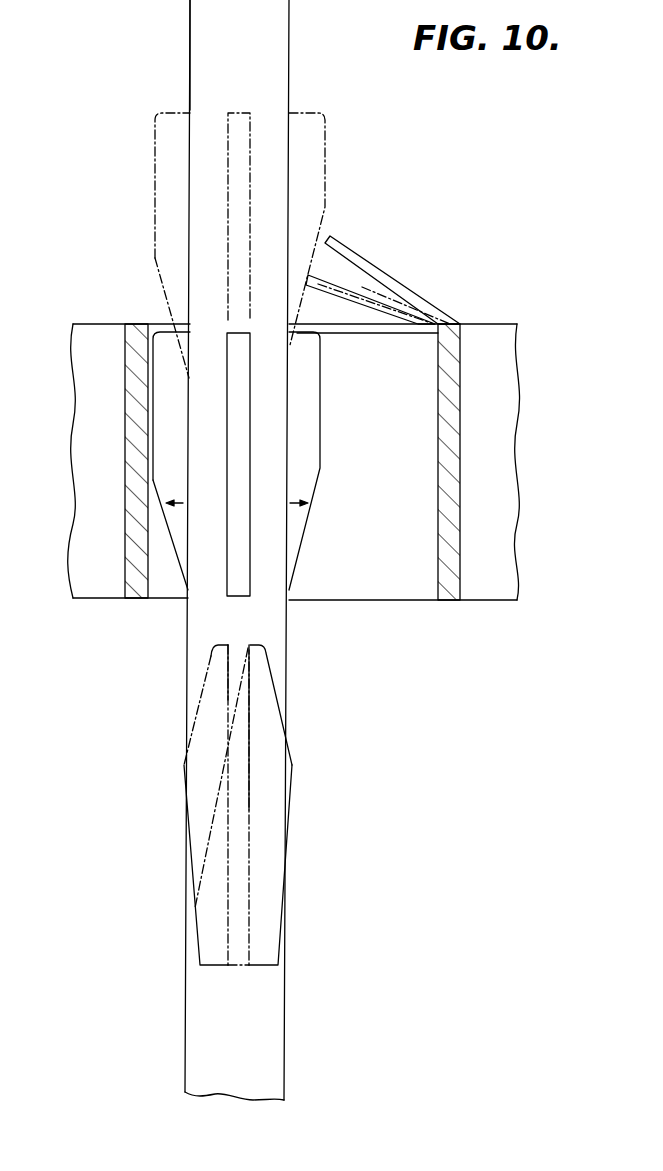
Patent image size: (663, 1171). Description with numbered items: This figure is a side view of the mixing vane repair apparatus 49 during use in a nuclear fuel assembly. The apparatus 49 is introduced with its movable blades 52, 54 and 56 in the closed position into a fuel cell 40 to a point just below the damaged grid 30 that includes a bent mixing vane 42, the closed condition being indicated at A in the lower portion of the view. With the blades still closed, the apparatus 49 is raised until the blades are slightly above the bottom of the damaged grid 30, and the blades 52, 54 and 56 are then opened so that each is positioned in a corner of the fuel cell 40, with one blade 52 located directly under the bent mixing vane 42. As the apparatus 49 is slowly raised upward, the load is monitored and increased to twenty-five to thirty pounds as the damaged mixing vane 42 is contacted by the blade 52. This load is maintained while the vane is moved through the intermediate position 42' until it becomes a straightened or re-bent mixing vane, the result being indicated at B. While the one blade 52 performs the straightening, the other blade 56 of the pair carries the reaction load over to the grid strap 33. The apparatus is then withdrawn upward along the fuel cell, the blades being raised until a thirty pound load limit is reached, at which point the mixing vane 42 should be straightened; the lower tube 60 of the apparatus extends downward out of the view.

The grid 30 is at (495, 353).
The grid strap 33 is at (80, 423).
The fuel cell 40 is at (148, 622).
The mixing vane 42 is at (367, 352).
The intermediate position of mixing vane 42' is at (378, 292).
The mixing vane repair apparatus 49 is at (183, 60).
The blade 52 is at (318, 157).
The blade 54 is at (245, 112).
The blade 56 is at (160, 167).
The tube 60 is at (187, 992).
The closed-blade insertion position A is at (116, 811).
The straightened vane position B is at (471, 248).